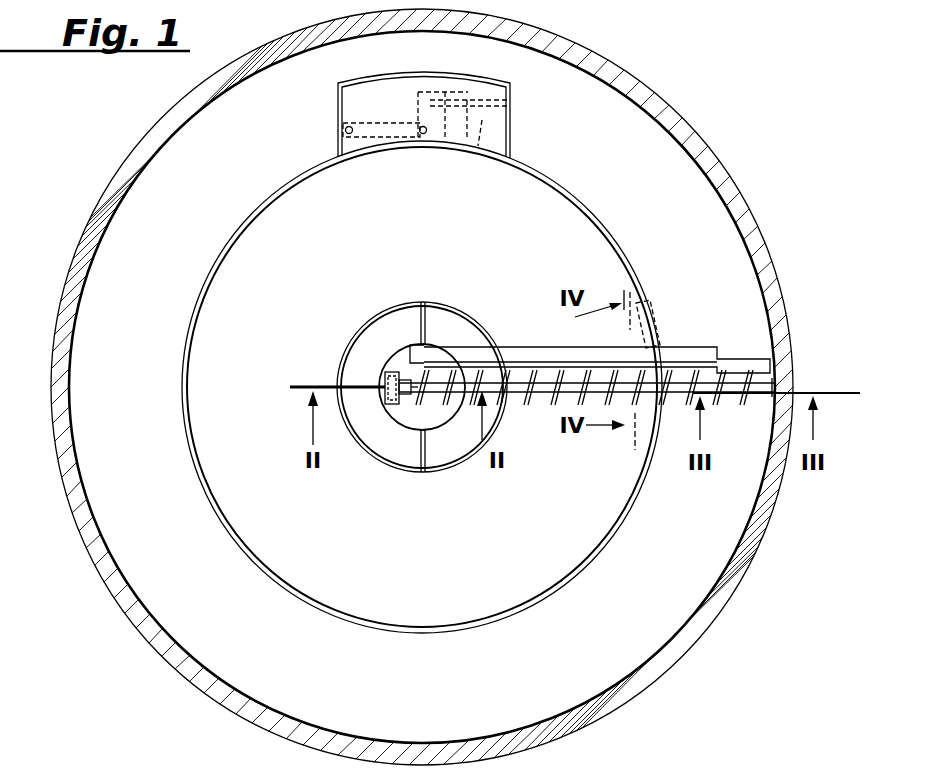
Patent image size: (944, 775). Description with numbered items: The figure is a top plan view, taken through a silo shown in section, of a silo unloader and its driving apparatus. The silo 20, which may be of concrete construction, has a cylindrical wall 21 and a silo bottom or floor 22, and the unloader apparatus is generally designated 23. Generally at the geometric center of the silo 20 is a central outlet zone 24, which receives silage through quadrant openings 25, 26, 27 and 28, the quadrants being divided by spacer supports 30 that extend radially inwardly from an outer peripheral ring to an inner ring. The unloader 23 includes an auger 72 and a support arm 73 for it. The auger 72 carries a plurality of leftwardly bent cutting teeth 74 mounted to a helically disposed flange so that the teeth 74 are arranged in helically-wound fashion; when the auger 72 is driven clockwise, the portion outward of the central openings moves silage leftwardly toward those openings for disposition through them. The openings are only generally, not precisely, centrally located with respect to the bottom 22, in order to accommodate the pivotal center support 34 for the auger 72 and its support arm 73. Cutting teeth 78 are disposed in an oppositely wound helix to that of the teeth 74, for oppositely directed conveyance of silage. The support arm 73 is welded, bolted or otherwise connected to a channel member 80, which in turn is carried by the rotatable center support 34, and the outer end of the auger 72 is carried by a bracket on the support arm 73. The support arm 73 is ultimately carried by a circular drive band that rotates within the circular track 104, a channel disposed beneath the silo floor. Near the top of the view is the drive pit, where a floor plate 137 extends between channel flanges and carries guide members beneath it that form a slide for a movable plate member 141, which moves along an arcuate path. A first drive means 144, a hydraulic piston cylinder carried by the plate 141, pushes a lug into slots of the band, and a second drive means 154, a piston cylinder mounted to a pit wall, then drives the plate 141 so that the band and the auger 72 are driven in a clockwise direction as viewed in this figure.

The silo 20 is at (765, 212).
The cylindrical wall 21 is at (720, 158).
The silo bottom or floor 22 is at (662, 157).
The unloader apparatus 23 is at (725, 338).
The central outlet zone 24 is at (402, 455).
The quadrant opening 25 is at (363, 323).
The quadrant opening 26 is at (432, 318).
The quadrant opening 27 is at (456, 452).
The quadrant opening 28 is at (373, 427).
The spacer support 30 is at (418, 308).
The pivotal center support 34 is at (437, 430).
The auger 72 is at (545, 402).
The support arm 73 is at (527, 357).
The cutting teeth 74 is at (578, 377).
The cutting teeth 78 is at (456, 398).
The channel member 80 is at (428, 350).
The track 104 is at (568, 185).
The floor plate 137 is at (355, 102).
The movable plate member 141 is at (478, 152).
The first drive means 144 is at (456, 82).
The second drive means 154 is at (379, 150).